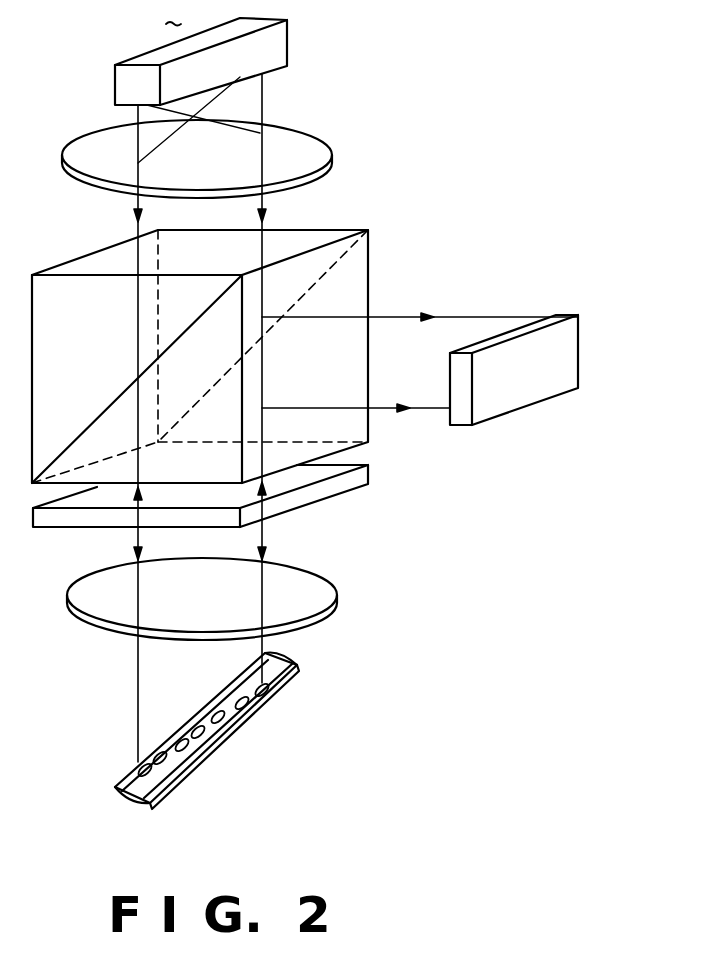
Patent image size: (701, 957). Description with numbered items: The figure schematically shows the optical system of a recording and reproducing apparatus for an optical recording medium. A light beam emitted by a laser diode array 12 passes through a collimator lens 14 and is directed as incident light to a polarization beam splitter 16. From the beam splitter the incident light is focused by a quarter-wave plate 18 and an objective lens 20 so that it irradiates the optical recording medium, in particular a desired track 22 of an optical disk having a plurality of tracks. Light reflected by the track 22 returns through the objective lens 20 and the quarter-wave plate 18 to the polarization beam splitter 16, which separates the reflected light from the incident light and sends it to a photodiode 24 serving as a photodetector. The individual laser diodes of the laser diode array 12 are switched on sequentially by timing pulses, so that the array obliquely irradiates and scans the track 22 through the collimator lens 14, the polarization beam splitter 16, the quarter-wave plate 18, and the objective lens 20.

The laser diode array 12 is at (280, 47).
The collimator lens 14 is at (293, 142).
The polarization beam splitter 16 is at (312, 235).
The λ/4 plate 18 is at (335, 485).
The objective lens 20 is at (323, 595).
The track 22 is at (173, 762).
The photodiode 24 is at (522, 395).